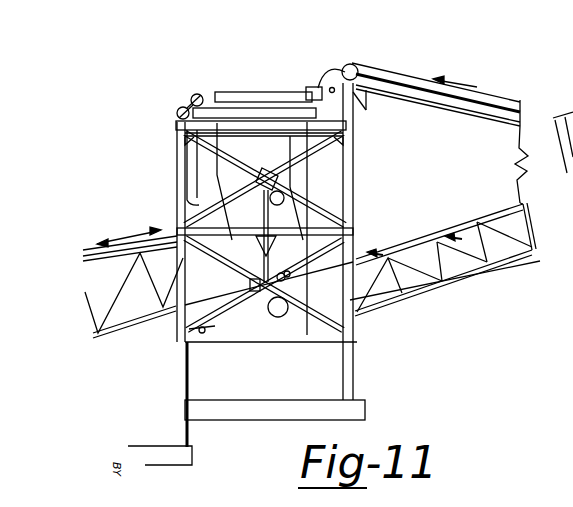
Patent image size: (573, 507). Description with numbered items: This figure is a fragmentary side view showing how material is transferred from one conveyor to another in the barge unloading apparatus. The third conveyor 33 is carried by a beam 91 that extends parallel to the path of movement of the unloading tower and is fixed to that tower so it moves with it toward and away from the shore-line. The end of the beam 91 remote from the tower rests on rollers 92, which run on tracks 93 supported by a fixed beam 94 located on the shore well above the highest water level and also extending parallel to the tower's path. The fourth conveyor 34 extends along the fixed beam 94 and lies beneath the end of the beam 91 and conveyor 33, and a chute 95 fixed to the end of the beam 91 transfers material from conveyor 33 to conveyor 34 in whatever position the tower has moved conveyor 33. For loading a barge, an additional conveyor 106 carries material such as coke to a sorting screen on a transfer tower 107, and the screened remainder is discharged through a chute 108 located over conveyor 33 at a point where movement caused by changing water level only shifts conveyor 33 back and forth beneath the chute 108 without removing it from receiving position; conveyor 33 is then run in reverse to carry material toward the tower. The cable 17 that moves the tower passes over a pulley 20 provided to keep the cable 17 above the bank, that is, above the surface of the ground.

The transfer tower 107 is at (210, 110).
The conveyor 106 is at (497, 94).
The chute 108 is at (187, 165).
The chute 95 is at (293, 214).
The third conveyor 33 is at (158, 227).
The tracks 93 is at (418, 238).
The beam 91 is at (130, 330).
The fixed beam 94 is at (402, 262).
The fourth conveyor 34 is at (502, 223).
The cable 17 is at (536, 267).
The pulley 20 is at (203, 333).
The rollers 92 is at (276, 318).